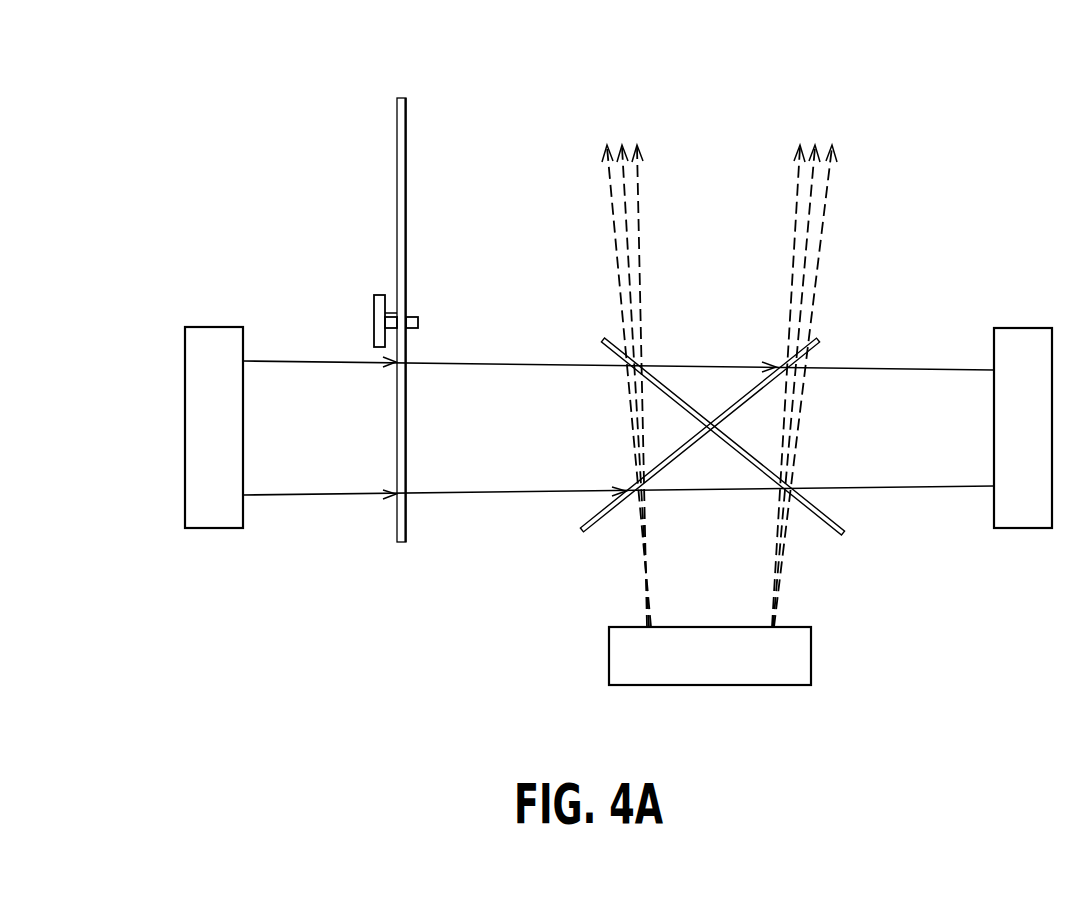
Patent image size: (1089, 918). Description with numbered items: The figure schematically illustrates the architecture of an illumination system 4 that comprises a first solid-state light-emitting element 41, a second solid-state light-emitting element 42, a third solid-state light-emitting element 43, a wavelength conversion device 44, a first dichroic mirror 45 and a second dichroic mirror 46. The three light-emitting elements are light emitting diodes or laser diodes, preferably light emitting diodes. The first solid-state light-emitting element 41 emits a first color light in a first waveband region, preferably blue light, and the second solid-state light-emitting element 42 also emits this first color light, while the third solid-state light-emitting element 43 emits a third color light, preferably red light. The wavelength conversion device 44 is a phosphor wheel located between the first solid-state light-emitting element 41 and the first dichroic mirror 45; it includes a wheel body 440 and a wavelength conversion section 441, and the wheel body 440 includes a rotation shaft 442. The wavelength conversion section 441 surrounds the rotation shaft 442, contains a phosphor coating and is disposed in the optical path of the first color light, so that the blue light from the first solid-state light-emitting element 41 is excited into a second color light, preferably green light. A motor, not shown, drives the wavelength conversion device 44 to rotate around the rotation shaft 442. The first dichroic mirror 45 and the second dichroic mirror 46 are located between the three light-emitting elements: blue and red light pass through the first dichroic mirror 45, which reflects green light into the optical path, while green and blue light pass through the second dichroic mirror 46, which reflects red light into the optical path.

The illumination system 4 is at (58, 172).
The first solid-state light-emitting element 41 is at (213, 327).
The second solid-state light-emitting element 42 is at (811, 655).
The third solid-state light-emitting element 43 is at (1028, 328).
The wavelength conversion device 44 is at (402, 282).
The wheel body 440 is at (406, 176).
The wavelength conversion section 441 is at (401, 390).
The rotation shaft 442 is at (387, 300).
The first dichroic mirror 45 is at (816, 344).
The second dichroic mirror 46 is at (603, 340).